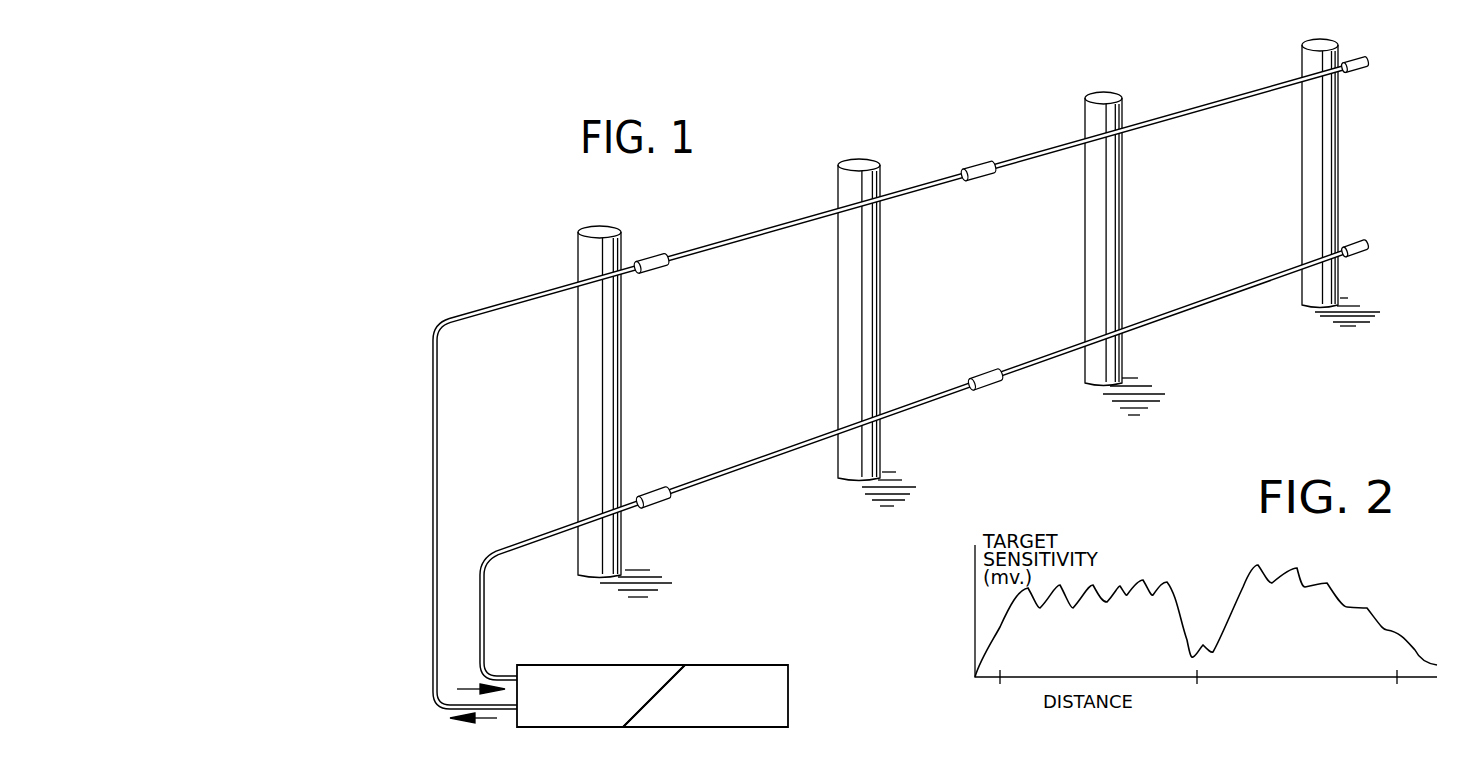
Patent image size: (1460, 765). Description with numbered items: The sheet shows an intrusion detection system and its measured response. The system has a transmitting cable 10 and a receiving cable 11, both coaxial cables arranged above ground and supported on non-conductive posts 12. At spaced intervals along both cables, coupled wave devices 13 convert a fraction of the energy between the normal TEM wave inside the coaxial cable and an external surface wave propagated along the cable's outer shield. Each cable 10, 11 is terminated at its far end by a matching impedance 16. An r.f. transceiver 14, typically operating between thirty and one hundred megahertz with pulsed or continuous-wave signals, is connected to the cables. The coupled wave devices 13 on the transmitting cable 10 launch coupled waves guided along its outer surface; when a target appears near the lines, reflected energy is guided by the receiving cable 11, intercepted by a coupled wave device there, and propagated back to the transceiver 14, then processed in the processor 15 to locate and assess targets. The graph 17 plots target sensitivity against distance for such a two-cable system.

In FIG. 1, the transmitting cable 10 is at (1223, 101).
In FIG. 1, the receiving cable 11 is at (1222, 294).
In FIG. 1, the non-conductive posts 12 is at (1093, 258).
In FIG. 1, the coupled wave devices 13 is at (979, 164).
In FIG. 1, the r.f. transceiver 14 is at (602, 665).
In FIG. 1, the processor 15 is at (738, 665).
In FIG. 1, the matching impedance 16 is at (1361, 73).
In FIG. 2, the graph 17 is at (1130, 588).